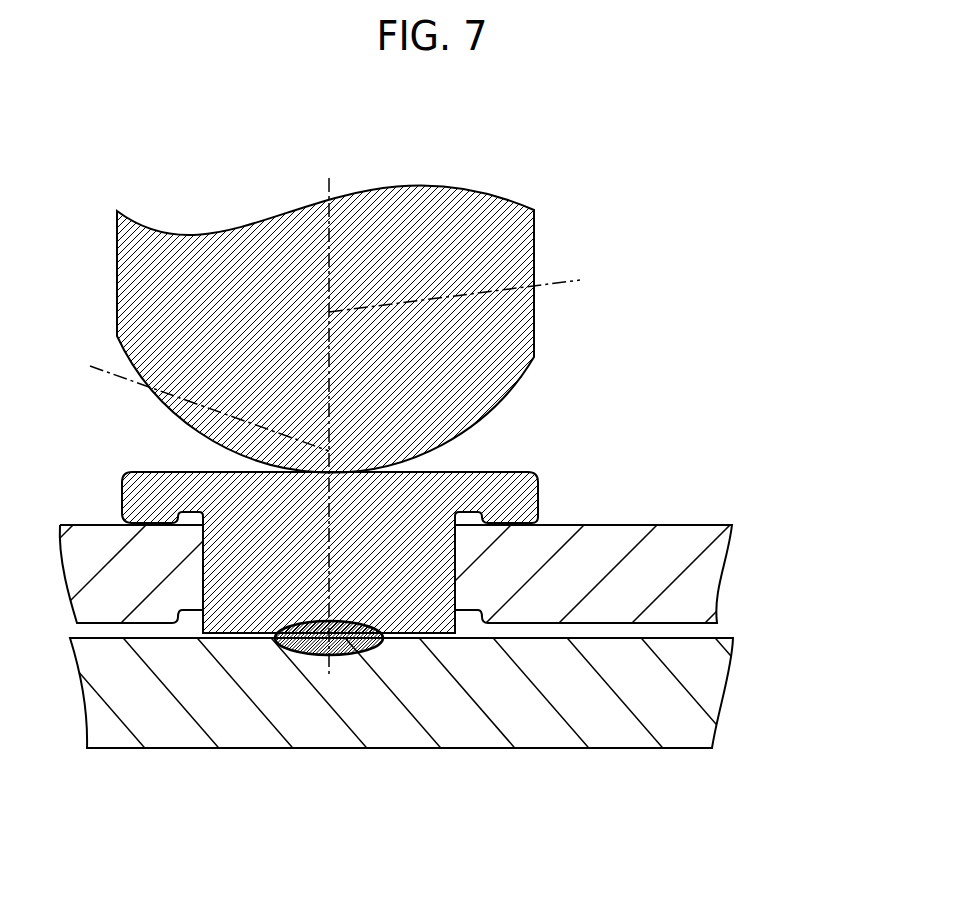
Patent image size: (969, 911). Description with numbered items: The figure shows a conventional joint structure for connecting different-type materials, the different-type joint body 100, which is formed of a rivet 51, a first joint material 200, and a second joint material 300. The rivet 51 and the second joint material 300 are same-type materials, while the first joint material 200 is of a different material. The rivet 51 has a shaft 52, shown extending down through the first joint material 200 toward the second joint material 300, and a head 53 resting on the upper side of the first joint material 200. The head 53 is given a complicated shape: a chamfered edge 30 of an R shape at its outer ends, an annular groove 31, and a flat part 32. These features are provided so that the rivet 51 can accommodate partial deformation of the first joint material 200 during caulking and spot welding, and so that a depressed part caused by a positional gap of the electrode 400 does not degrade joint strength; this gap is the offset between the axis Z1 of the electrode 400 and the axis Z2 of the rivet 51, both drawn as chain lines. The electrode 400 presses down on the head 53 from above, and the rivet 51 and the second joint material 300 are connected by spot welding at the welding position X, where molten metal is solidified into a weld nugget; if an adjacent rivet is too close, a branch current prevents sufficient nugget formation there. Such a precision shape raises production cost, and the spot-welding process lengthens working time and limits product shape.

The different-type joint body 100 is at (436, 594).
The first joint material 200 is at (683, 605).
The second joint material 300 is at (430, 693).
The electrode 400 is at (520, 383).
The rivet 51 is at (404, 500).
The shaft 52 is at (428, 568).
The head 53 is at (391, 441).
The chamfered edge 30 is at (128, 520).
The annular groove 31 is at (132, 473).
The flat part 32 is at (120, 513).
The axis of electrode Z1 is at (473, 289).
The axis of rivet Z2 is at (190, 401).
The welding position X is at (307, 657).